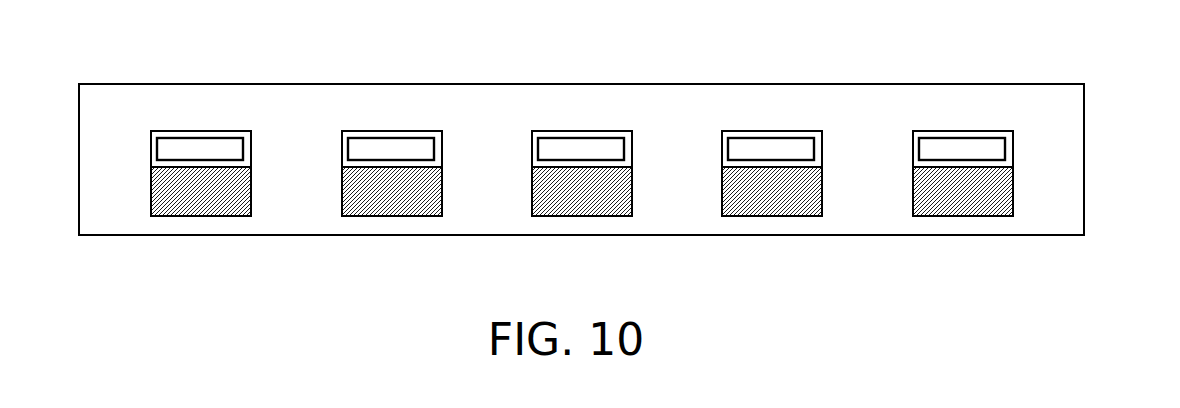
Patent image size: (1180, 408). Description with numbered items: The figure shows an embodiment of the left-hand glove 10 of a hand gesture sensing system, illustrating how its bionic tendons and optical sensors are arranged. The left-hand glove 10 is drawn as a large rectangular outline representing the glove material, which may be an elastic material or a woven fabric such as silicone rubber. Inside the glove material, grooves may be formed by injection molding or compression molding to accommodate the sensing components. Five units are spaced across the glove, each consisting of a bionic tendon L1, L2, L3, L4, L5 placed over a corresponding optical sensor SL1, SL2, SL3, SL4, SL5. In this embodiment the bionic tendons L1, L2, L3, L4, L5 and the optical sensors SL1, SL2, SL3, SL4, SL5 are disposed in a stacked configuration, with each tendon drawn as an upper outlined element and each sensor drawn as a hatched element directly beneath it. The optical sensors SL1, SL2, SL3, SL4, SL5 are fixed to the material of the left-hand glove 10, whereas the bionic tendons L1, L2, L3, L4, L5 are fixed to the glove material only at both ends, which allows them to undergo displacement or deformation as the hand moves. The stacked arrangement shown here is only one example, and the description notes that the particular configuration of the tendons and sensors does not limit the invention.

The left-hand glove 10 is at (1085, 124).
The bionic tendon L1 is at (960, 145).
The bionic tendon L2 is at (769, 145).
The bionic tendon L3 is at (579, 145).
The bionic tendon L4 is at (389, 145).
The bionic tendon L5 is at (198, 145).
The optical sensor SL1 is at (965, 216).
The optical sensor SL2 is at (774, 216).
The optical sensor SL3 is at (584, 216).
The optical sensor SL4 is at (394, 216).
The optical sensor SL5 is at (203, 216).